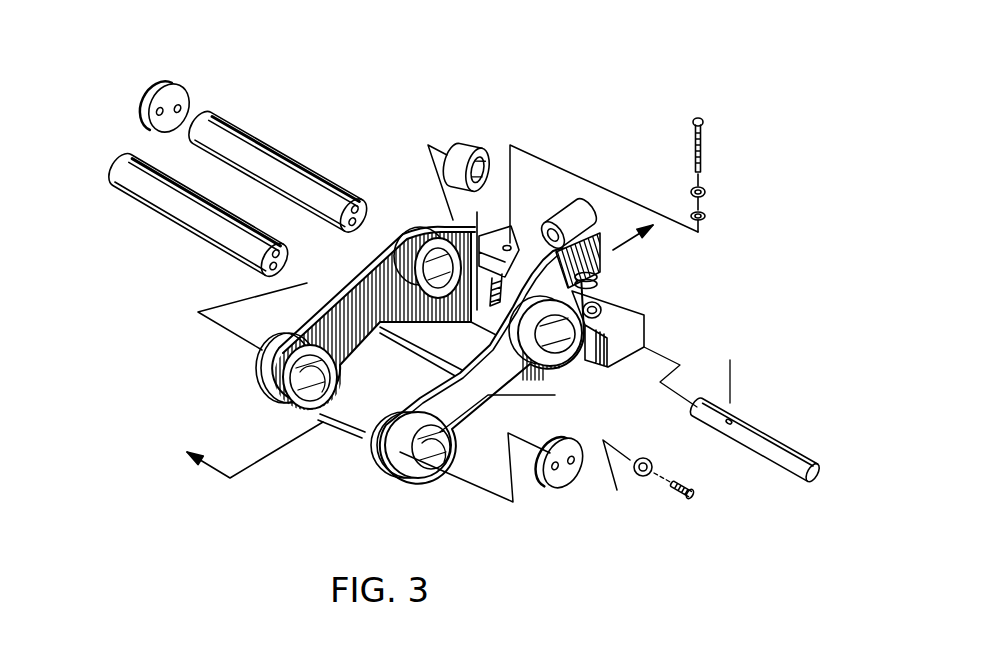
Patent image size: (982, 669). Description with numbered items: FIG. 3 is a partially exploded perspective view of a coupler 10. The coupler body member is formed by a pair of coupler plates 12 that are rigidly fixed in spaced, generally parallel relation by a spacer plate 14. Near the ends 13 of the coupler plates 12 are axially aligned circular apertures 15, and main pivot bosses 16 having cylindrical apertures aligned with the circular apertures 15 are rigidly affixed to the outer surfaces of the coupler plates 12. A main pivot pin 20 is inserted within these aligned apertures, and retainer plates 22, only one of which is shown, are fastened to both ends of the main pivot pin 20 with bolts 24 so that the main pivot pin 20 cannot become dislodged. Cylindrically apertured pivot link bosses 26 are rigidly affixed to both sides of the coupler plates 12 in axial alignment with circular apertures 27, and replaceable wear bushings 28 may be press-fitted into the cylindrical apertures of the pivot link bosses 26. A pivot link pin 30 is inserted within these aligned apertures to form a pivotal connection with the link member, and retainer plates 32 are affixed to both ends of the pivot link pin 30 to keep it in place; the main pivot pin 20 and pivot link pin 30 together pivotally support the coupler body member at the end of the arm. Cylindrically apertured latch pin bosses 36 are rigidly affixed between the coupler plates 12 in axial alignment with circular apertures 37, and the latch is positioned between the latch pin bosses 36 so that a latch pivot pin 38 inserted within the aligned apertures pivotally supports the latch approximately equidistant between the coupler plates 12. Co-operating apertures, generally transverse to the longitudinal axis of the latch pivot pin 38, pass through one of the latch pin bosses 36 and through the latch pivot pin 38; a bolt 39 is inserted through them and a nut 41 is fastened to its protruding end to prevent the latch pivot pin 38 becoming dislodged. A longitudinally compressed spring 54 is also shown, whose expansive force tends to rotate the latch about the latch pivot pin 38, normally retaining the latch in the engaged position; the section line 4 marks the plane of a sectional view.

The section line 4- 4 is at (440, 323).
The coupler 10 is at (354, 284).
The coupler plates 12 is at (347, 320).
The ends of coupler plates 13 is at (268, 390).
The spacer plate 14 is at (365, 410).
The circular apertures 15 is at (303, 414).
The main pivot bosses 16 is at (283, 345).
The main pivot pin 20 is at (172, 205).
The retainer plates 22 is at (563, 484).
The bolts 24 is at (683, 498).
The pivot link bosses 26 is at (402, 258).
The circular apertures 27 is at (440, 250).
The replaceable wear bushings 28 is at (458, 156).
The pivot link pin 30 is at (264, 160).
The retainer plates 32 is at (182, 90).
The latch pin bosses 36 is at (506, 242).
The circular apertures 37 is at (602, 306).
The latch pivot pin 38 is at (805, 473).
The bolt 39 is at (703, 140).
The nut 41 is at (707, 214).
The spring 54 is at (600, 265).